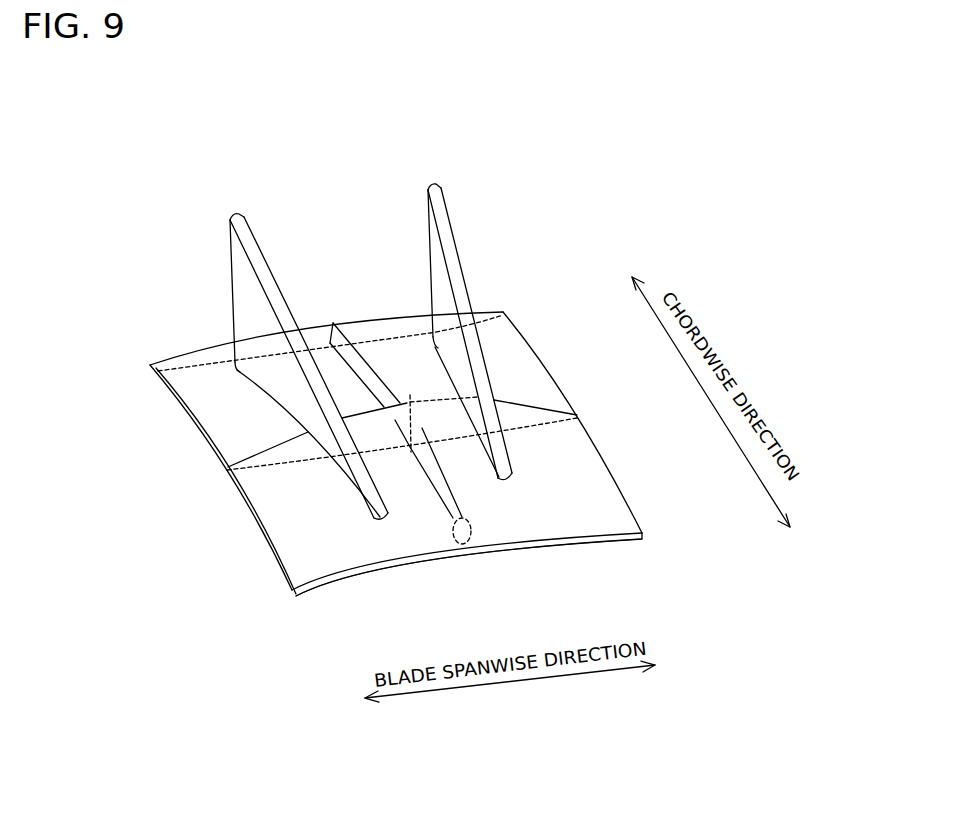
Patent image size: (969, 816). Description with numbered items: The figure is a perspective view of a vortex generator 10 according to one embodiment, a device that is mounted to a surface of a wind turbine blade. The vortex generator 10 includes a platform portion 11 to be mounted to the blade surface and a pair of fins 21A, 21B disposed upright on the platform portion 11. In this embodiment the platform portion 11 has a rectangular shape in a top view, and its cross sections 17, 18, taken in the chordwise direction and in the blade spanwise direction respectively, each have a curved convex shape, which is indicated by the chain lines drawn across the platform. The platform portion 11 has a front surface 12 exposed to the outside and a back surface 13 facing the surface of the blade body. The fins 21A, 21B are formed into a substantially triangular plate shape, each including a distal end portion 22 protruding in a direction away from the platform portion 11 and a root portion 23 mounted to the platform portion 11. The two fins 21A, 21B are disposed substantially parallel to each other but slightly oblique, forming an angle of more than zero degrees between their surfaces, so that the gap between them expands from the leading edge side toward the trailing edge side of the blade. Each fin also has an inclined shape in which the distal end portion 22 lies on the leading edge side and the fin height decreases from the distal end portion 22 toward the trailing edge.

The vortex generator 10 is at (119, 253).
The platform portion 11 is at (540, 364).
The front surface 12 is at (575, 455).
The back surface 13 is at (592, 488).
The cross section 17 is at (454, 520).
The cross section 18 is at (290, 461).
The fin 21A is at (229, 219).
The fin 21B is at (429, 188).
The distal end portion 22 is at (240, 215).
The root portion 23 is at (236, 381).